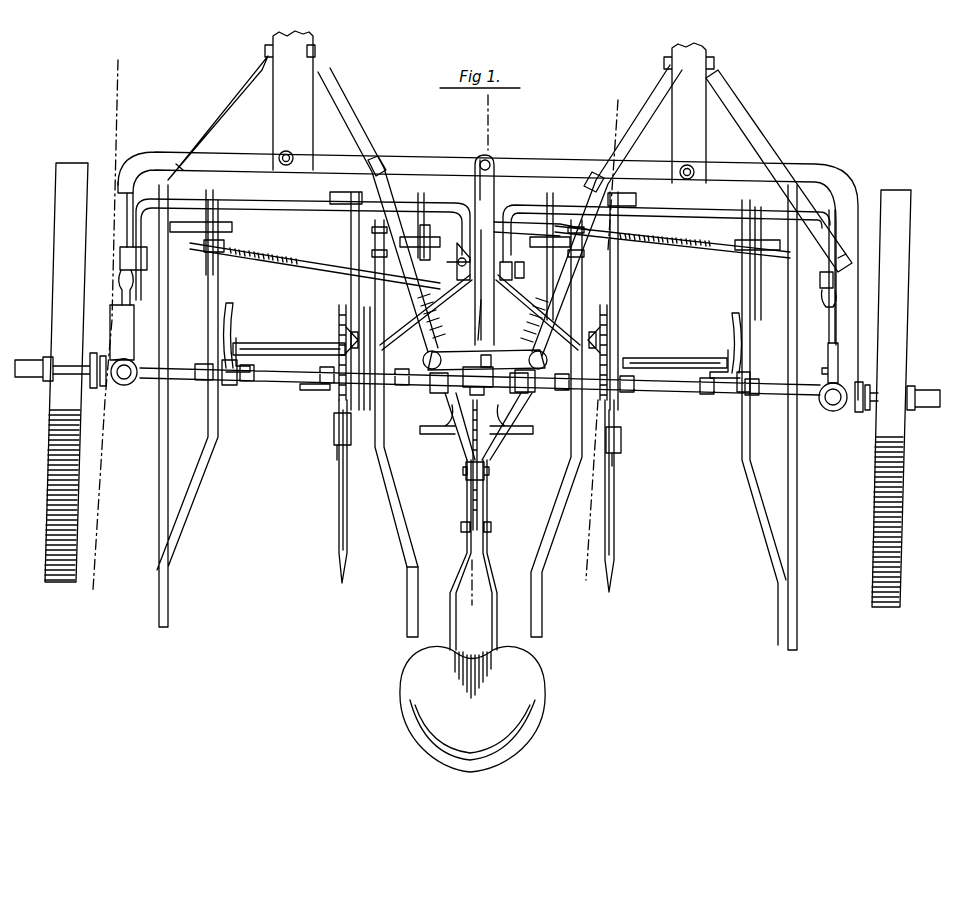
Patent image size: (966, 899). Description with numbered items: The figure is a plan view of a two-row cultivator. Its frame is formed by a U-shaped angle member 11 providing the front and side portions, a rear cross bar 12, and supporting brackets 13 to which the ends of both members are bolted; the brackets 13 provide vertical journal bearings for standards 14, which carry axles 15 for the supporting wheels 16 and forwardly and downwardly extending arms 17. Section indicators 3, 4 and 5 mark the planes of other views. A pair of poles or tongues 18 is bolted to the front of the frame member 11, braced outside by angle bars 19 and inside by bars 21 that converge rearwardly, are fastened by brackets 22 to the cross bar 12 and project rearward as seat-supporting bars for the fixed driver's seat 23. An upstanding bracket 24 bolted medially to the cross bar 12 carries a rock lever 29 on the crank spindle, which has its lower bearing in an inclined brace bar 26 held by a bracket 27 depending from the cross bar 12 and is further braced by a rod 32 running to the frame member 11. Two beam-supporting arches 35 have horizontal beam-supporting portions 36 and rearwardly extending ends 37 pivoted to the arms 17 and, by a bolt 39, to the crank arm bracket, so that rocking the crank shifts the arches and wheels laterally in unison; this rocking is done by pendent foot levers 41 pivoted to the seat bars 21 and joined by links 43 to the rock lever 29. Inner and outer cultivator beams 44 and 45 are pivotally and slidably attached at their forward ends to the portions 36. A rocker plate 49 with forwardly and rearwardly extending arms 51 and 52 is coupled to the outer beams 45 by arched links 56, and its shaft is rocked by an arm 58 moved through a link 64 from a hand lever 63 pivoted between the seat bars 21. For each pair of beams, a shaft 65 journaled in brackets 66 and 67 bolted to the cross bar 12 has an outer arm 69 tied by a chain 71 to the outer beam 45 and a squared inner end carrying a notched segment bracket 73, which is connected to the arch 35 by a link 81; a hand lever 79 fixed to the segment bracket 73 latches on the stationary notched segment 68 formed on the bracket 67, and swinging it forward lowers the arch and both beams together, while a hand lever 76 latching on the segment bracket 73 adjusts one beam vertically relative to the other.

The section line 3- 3 is at (122, 92).
The section line 4- 4 is at (500, 120).
The section line 5- 5 is at (630, 115).
The U-shaped angle member 11 is at (160, 152).
The rear cross bar 12 is at (272, 383).
The supporting brackets 13 is at (134, 338).
The standards 14 is at (130, 385).
The axles 15 is at (95, 390).
The supporting wheels 16 is at (52, 318).
The arms 17 is at (130, 298).
The poles or tongues 18 is at (295, 72).
The angle bars 19 is at (228, 105).
The bars 21 is at (345, 128).
The brackets 22 is at (432, 385).
The driver's seat 23 is at (545, 695).
The upstanding bracket 24 is at (476, 388).
The inclined brace bar 26 is at (496, 180).
The bracket 27 is at (535, 372).
The rock lever 29 is at (505, 350).
The rod 32 is at (477, 178).
The beam-supporting arches 35 is at (305, 203).
The horizontal beam-supporting portions 36 is at (216, 200).
The rearwardly extending ends 37 is at (127, 222).
The bolt 39 is at (120, 266).
The pendent levers 41 is at (434, 312).
The links 43 is at (425, 318).
The inner beams 44 is at (400, 486).
The outer beams 45 is at (212, 450).
The rocker plate 49 is at (457, 252).
The forwardly extending arm 51 is at (478, 210).
The rearwardly extending arm 52 is at (476, 312).
The arched links 56 is at (318, 262).
The arm 58 is at (514, 270).
The hand lever 63 is at (484, 472).
The link 64 is at (500, 440).
The shaft 65 is at (298, 343).
The bracket 66 is at (240, 340).
The bracket 67 is at (330, 388).
The notched segment 68 is at (346, 335).
The arm 69 is at (234, 318).
The chain 71 is at (222, 368).
The segment bracket 73 is at (340, 318).
The hand lever 76 is at (352, 447).
The hand lever 79 is at (338, 490).
The link 81 is at (351, 241).